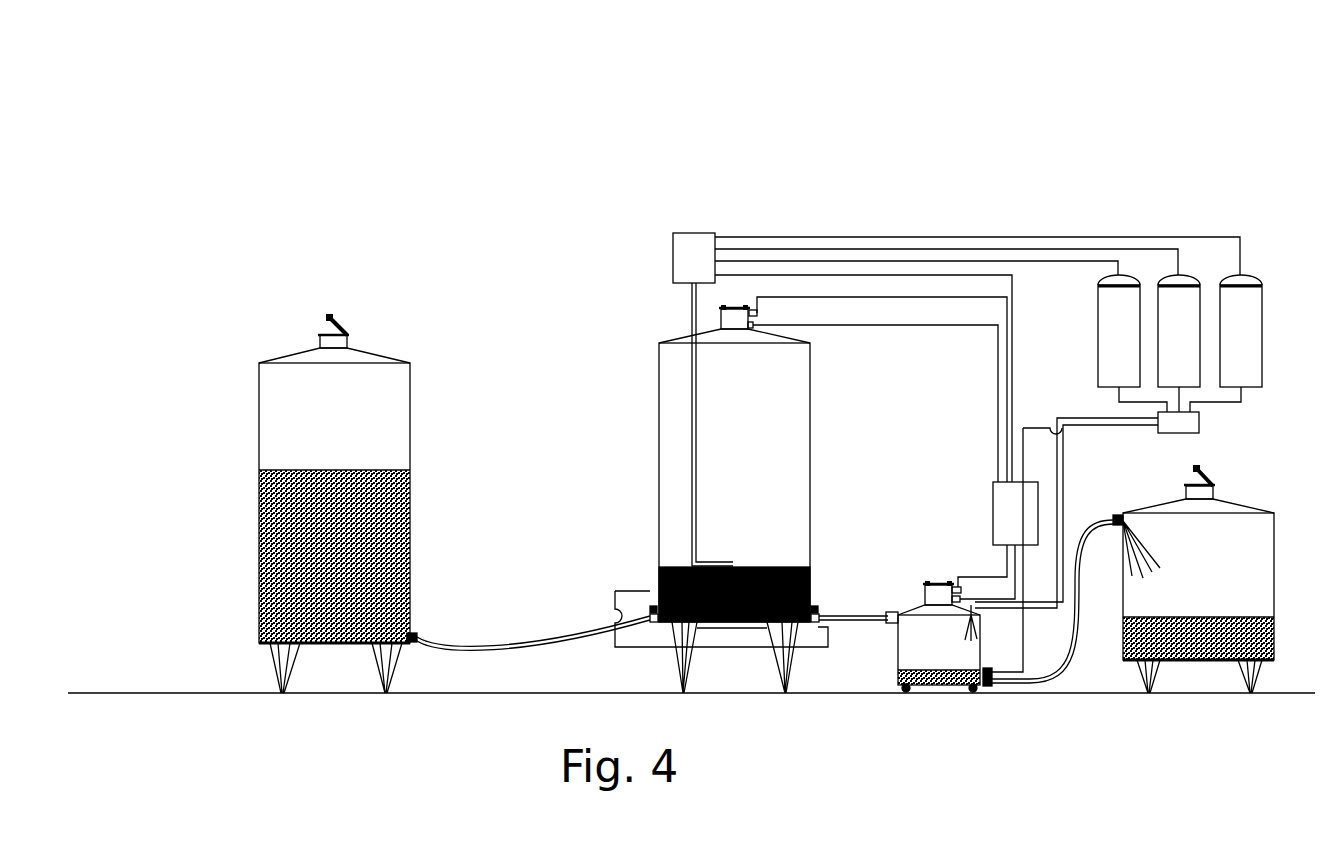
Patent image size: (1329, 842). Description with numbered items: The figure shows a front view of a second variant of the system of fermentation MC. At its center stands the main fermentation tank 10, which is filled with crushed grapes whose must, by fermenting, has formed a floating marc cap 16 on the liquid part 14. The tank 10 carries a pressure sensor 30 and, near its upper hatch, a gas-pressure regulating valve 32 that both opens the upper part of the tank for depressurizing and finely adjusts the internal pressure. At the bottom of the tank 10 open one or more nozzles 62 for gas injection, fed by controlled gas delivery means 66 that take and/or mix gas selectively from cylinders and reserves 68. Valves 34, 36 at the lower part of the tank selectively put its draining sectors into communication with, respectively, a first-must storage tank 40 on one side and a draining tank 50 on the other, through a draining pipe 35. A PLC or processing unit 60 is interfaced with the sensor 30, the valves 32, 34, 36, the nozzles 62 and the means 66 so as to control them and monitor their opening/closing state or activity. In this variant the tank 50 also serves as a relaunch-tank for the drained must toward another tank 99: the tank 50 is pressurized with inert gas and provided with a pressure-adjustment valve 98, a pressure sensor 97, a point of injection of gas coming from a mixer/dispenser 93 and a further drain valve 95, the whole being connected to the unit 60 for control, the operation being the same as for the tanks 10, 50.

The system of fermentation MC is at (870, 145).
The main fermentation tank 10 is at (659, 455).
The liquid part 14 is at (259, 588).
The marc cap 16 is at (778, 567).
The pressure sensor 30 is at (753, 324).
The gas-pressure regulating valve 32 is at (760, 303).
The valve 34 is at (818, 608).
The draining pipe 35 is at (841, 623).
The valve 36 is at (651, 607).
The first-must storage tank 40 is at (372, 352).
The draining tank 50 is at (898, 650).
The PLC or processing unit 60 is at (1029, 529).
The nozzles for gas injection 62 is at (692, 303).
The controlled gas delivery means 66 is at (694, 236).
The cylinders and reserves 68 is at (1100, 325).
The mixer/dispenser 93 is at (1199, 419).
The further drain valve 95 is at (989, 668).
The pressure sensor 97 is at (960, 599).
The pressure-adjustment valve 98 is at (957, 582).
The another tank 99 is at (1268, 558).